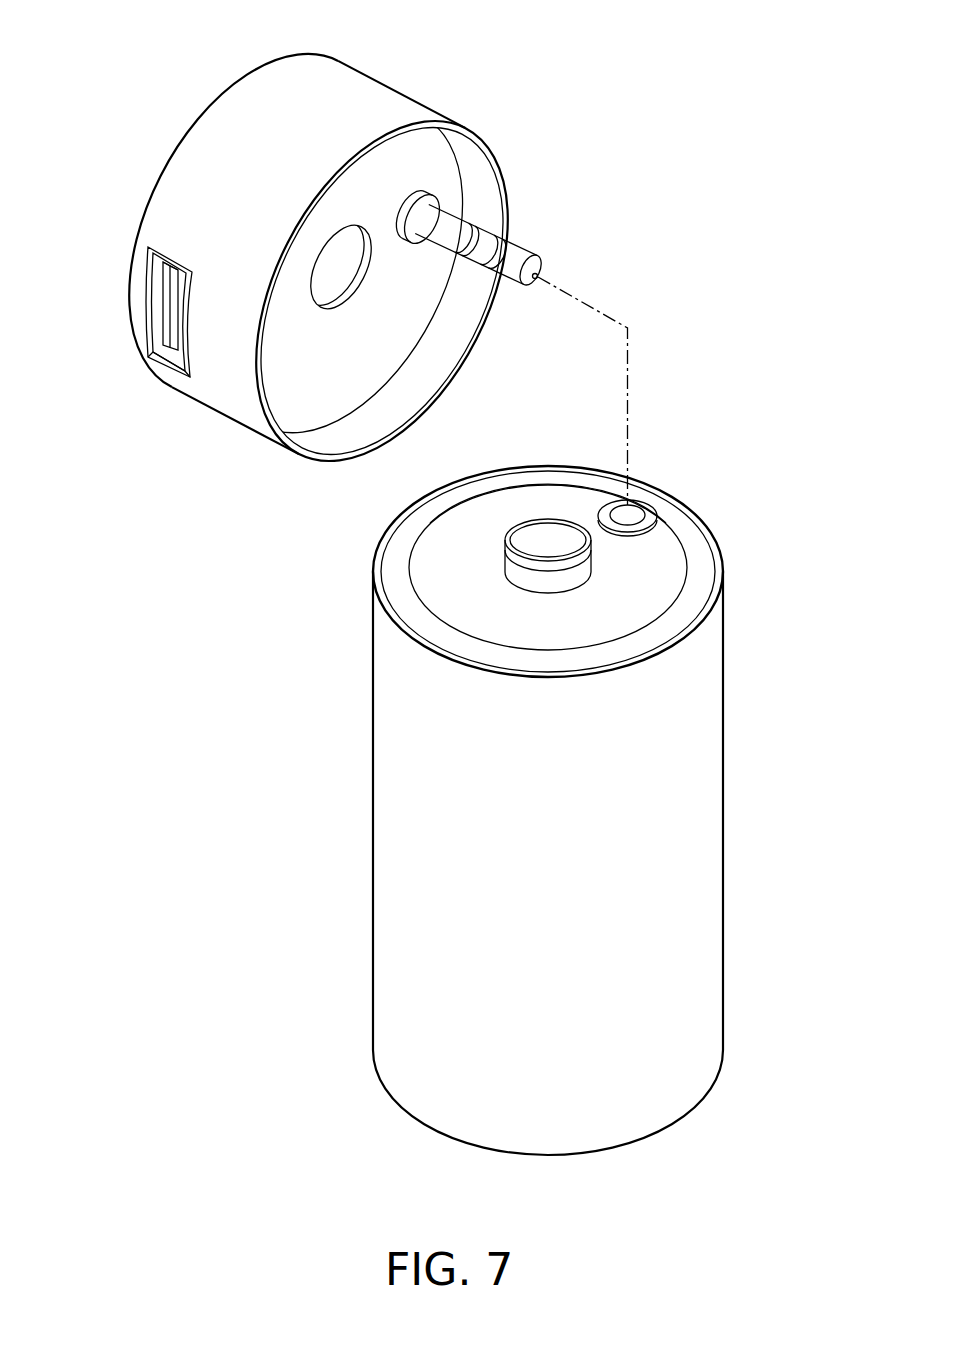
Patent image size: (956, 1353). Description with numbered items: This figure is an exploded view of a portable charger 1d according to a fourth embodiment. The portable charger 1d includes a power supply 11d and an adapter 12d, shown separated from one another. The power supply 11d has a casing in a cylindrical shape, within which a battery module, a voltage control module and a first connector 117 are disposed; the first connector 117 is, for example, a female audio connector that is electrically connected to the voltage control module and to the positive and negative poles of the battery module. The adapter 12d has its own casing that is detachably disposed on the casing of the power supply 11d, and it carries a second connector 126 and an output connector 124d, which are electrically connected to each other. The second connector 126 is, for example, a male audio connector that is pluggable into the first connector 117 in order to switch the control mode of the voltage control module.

The portable charger 1d is at (128, 27).
The adapter 12d is at (447, 95).
The second connector 126 is at (521, 258).
The output connector 124d is at (165, 321).
The power supply 11d is at (755, 780).
The first connector 117 is at (650, 511).